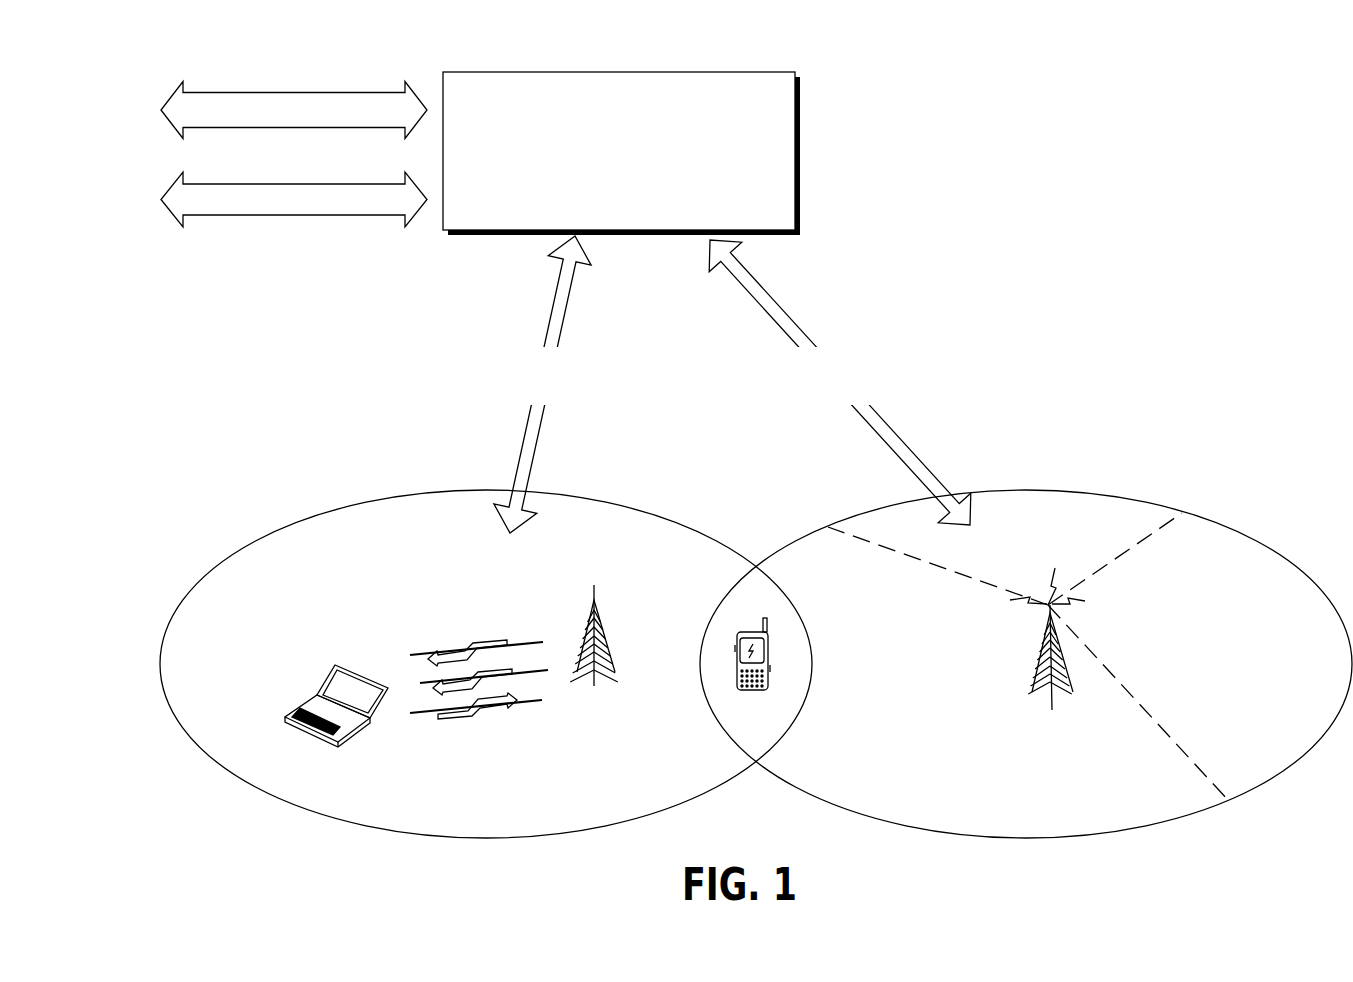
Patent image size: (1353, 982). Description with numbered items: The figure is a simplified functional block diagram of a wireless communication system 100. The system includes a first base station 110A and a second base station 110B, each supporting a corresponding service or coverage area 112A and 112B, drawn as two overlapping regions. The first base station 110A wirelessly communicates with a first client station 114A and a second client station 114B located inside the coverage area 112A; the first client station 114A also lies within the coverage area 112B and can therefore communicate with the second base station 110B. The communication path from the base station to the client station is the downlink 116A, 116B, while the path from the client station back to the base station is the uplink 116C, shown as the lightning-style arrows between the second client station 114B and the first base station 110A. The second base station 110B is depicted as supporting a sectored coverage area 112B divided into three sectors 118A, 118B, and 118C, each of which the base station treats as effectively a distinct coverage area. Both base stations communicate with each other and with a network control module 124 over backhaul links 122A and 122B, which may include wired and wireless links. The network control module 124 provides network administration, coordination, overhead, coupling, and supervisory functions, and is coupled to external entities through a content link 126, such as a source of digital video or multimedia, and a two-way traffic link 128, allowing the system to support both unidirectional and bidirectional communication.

The wireless communication system 100 is at (1284, 70).
The network control module 124 is at (612, 72).
The content link 126 is at (272, 92).
The two-way traffic link 128 is at (272, 184).
The backhaul link 122A is at (553, 300).
The backhaul link 122B is at (793, 316).
The coverage area 112A is at (264, 538).
The sectored coverage area 112B is at (1272, 548).
The first base station 110A is at (596, 686).
The second base station 110B is at (1053, 706).
The first client station 114A is at (753, 690).
The second client station 114B is at (318, 745).
The downlink 116A is at (462, 640).
The downlink 116B is at (415, 683).
The uplink 116C is at (475, 717).
The sector 118A is at (1045, 812).
The sector 118B is at (1143, 530).
The sector 118C is at (1303, 670).